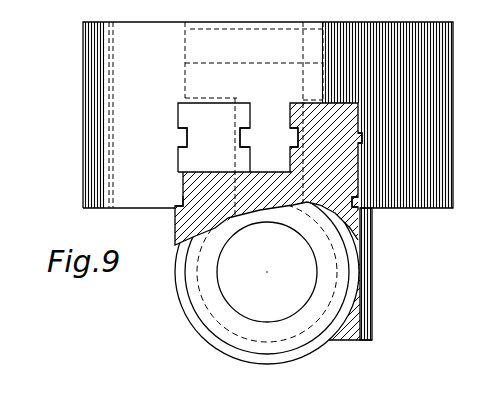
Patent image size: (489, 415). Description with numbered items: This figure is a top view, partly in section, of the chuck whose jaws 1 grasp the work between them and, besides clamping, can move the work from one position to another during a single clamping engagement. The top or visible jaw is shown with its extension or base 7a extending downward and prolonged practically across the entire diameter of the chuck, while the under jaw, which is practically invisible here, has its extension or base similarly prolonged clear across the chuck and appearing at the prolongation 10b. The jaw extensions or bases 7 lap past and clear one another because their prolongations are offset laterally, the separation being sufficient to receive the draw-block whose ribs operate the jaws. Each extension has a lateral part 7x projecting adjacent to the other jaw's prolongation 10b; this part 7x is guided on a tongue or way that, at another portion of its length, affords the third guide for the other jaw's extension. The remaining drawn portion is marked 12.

The jaws 1 is at (178, 306).
The extension or base of the jaw 7 is at (300, 256).
The lateral part of the jaw extension 7x is at (205, 208).
The extension or base of the upper jaw 7a is at (326, 156).
The prolongation of the under jaw extension 10b is at (235, 157).
The frame member 12 is at (457, 158).